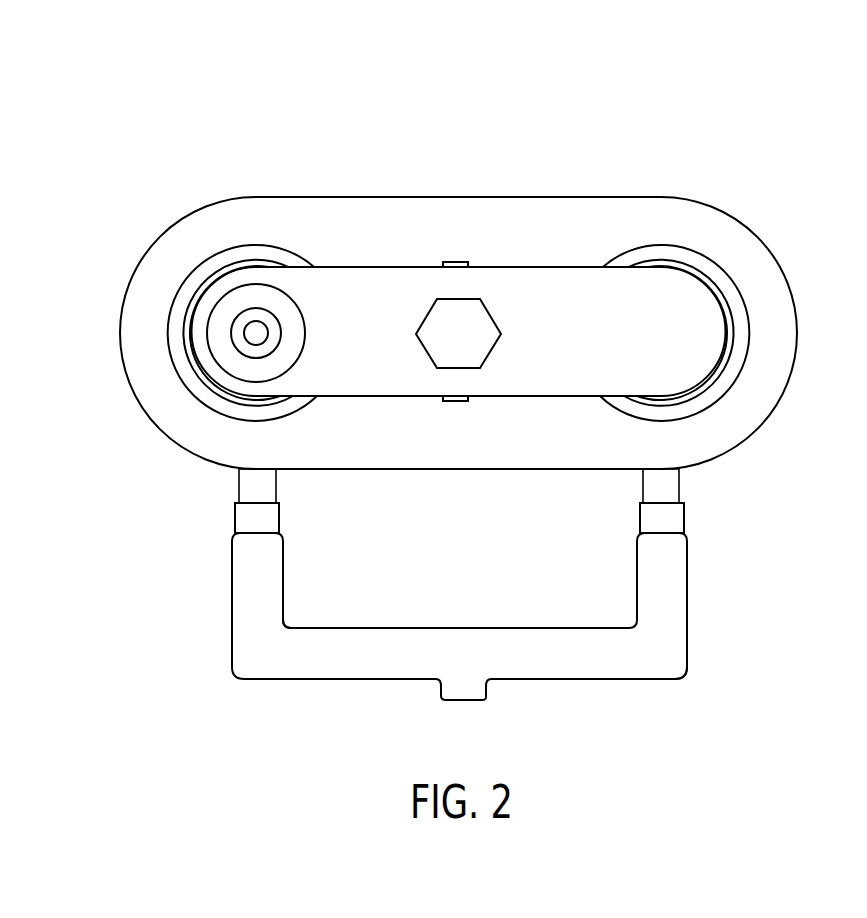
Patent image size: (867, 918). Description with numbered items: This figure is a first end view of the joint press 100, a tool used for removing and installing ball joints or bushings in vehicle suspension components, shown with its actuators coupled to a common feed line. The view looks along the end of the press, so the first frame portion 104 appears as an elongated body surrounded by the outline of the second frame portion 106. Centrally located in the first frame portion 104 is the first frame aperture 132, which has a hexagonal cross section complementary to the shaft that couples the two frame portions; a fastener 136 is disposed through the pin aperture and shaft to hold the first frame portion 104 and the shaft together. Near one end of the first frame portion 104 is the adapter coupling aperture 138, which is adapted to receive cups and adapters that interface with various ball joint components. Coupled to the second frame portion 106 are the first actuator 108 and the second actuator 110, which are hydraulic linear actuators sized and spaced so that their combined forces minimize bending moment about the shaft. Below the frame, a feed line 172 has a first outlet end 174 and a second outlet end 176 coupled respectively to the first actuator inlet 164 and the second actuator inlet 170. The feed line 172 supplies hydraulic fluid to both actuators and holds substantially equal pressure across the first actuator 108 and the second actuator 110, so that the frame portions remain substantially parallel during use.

The joint press 100 is at (785, 132).
The first frame portion 104 is at (358, 280).
The second frame portion 106 is at (603, 198).
The first actuator 108 is at (173, 325).
The second actuator 110 is at (737, 317).
The first frame aperture 132 is at (484, 305).
The fastener 136 is at (455, 262).
The adapter coupling aperture 138 is at (237, 287).
The first actuator inlet 164 is at (235, 515).
The second actuator inlet 170 is at (640, 517).
The feed line 172 is at (353, 668).
The first outlet end 174 is at (283, 565).
The second outlet end 176 is at (687, 557).